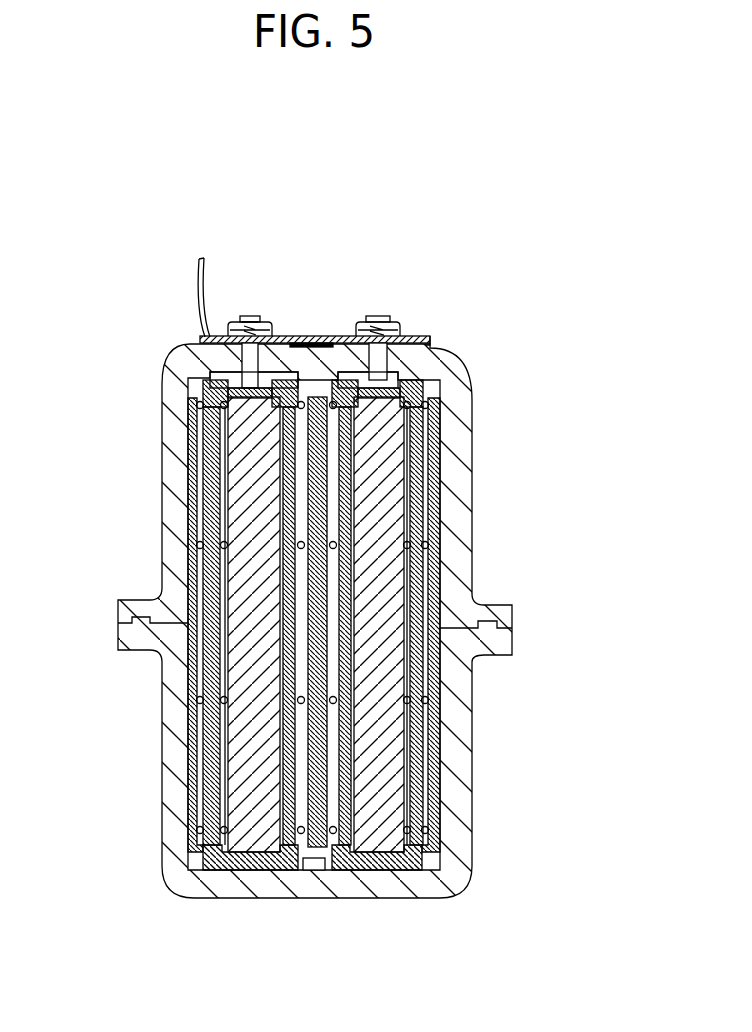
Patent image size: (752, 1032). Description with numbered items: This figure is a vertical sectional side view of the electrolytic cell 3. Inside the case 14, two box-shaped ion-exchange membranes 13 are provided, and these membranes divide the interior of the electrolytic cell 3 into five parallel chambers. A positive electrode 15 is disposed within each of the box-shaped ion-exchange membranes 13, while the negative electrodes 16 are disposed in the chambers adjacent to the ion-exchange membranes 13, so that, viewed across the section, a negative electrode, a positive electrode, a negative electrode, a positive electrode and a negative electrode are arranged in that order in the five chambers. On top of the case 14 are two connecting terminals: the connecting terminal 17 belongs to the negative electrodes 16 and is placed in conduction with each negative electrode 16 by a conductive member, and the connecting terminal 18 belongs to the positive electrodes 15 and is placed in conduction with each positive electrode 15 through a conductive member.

The electrolytic cell 3 is at (496, 338).
The box-shaped ion-exchange membrane 13 is at (228, 873).
The case 14 is at (462, 498).
The positive electrode 15 is at (237, 437).
The negative electrode 16 is at (187, 485).
The connecting terminal of the negative electrode 17 is at (251, 314).
The connecting terminal of the positive electrode 18 is at (374, 312).